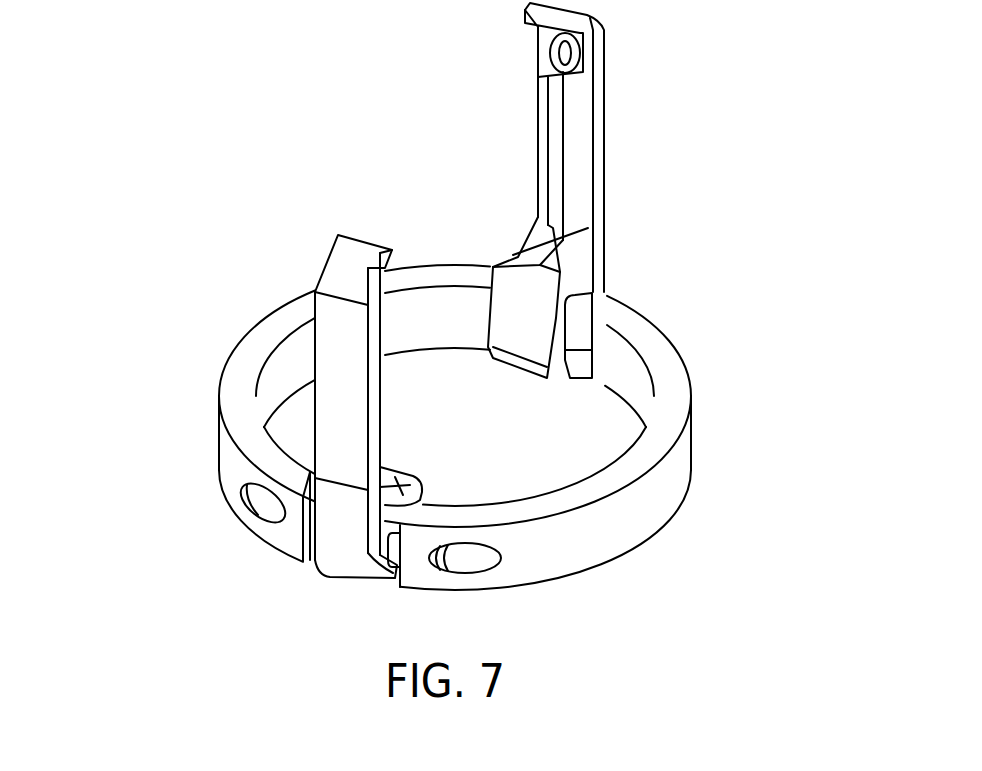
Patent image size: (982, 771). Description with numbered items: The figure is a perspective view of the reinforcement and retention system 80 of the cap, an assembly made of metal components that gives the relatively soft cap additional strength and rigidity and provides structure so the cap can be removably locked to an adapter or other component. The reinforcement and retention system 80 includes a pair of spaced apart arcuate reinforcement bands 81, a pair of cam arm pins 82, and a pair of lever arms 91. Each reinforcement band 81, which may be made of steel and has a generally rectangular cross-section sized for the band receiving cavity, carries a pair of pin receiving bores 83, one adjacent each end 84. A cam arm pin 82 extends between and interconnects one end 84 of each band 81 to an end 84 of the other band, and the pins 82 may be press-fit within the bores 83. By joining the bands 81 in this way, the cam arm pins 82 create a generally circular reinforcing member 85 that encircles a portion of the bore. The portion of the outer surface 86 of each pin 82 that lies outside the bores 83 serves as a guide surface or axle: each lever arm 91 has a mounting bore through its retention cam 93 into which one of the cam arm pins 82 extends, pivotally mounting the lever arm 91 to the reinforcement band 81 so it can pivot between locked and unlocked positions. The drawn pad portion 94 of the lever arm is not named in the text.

The reinforcement and retention system 80 is at (215, 212).
The reinforcement band 81 is at (237, 387).
The cam arm pin 82 is at (577, 312).
The pin receiving bore 83 is at (263, 507).
The end 84 is at (317, 563).
The reinforcing member 85 is at (447, 238).
The outer surface 86 is at (577, 350).
The lever arm 91 is at (597, 138).
The retention cam 93 is at (570, 352).
The clamp pad 94 is at (413, 466).